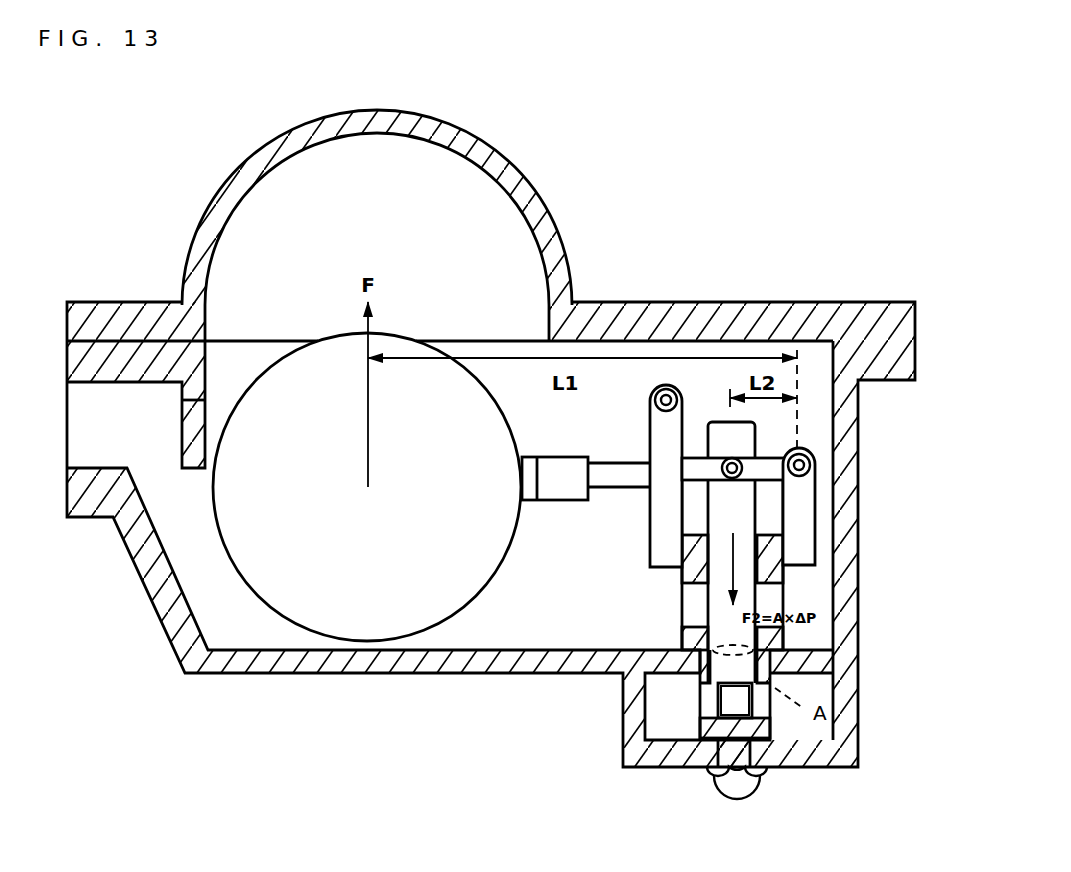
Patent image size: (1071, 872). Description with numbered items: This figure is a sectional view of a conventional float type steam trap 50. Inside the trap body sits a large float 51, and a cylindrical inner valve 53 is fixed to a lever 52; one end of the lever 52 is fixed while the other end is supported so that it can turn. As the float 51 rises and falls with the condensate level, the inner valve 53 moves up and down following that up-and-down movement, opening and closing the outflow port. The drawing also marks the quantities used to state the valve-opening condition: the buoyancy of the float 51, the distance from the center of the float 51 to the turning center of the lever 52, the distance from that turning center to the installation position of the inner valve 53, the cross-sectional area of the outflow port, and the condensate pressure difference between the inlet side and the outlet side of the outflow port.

The float type steam trap 50 is at (713, 277).
The float 51 is at (382, 597).
The lever 52 is at (563, 482).
The inner valve 53 is at (732, 508).